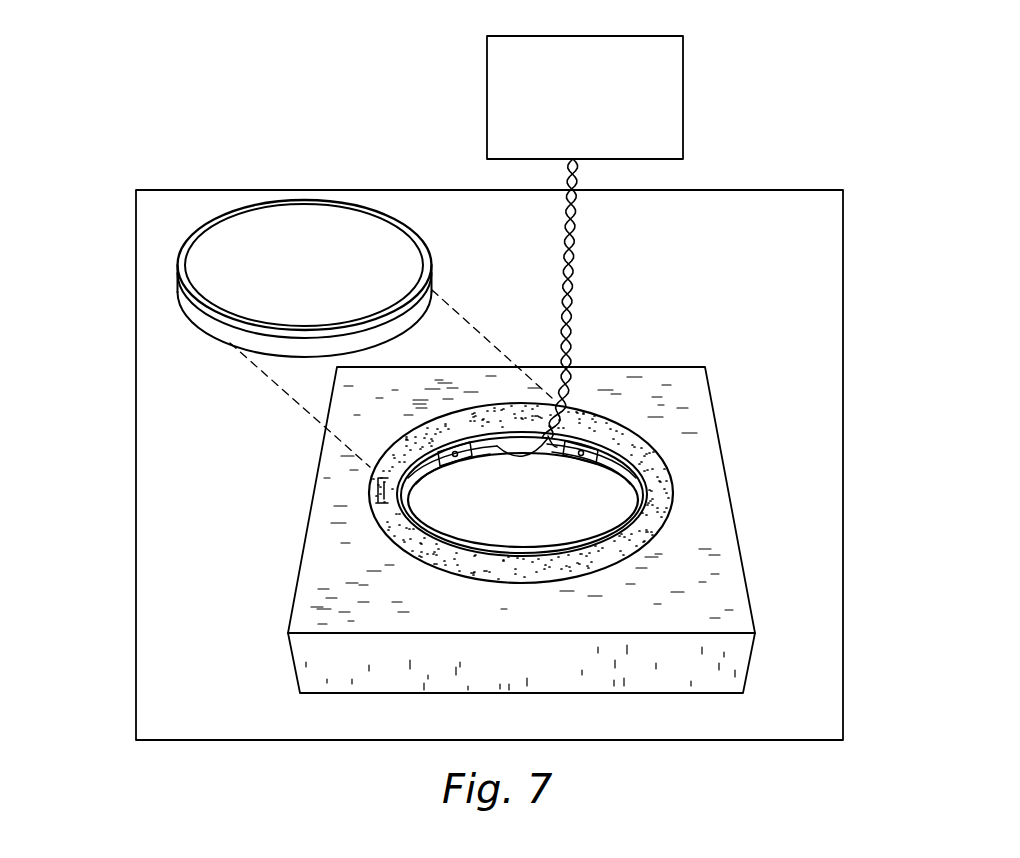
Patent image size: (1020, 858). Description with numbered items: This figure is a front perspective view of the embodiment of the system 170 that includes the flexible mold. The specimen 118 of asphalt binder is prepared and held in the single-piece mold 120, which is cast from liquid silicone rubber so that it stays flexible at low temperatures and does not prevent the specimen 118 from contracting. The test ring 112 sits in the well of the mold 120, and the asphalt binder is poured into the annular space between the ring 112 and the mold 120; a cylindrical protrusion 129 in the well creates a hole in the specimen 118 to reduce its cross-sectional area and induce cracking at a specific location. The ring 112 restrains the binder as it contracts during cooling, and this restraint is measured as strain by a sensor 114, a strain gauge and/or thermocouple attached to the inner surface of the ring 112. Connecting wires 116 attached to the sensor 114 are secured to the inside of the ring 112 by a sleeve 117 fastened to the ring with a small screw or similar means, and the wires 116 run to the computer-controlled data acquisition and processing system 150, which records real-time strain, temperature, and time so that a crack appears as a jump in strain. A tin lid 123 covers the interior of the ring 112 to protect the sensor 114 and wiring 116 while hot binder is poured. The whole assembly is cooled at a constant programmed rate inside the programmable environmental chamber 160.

The programmable environmental chamber 160 is at (229, 190).
The data acquisition and processing system 150 is at (737, 68).
The tin lid 123 is at (177, 288).
The system 170 is at (72, 350).
The single-piece mold 120 is at (263, 777).
The specimen 118 is at (620, 543).
The test ring 112 is at (415, 540).
The cylindrical protrusion 129 is at (378, 494).
The sleeve 117 is at (760, 143).
The sensor 114 is at (112, 453).
The connecting wires 116 is at (563, 290).